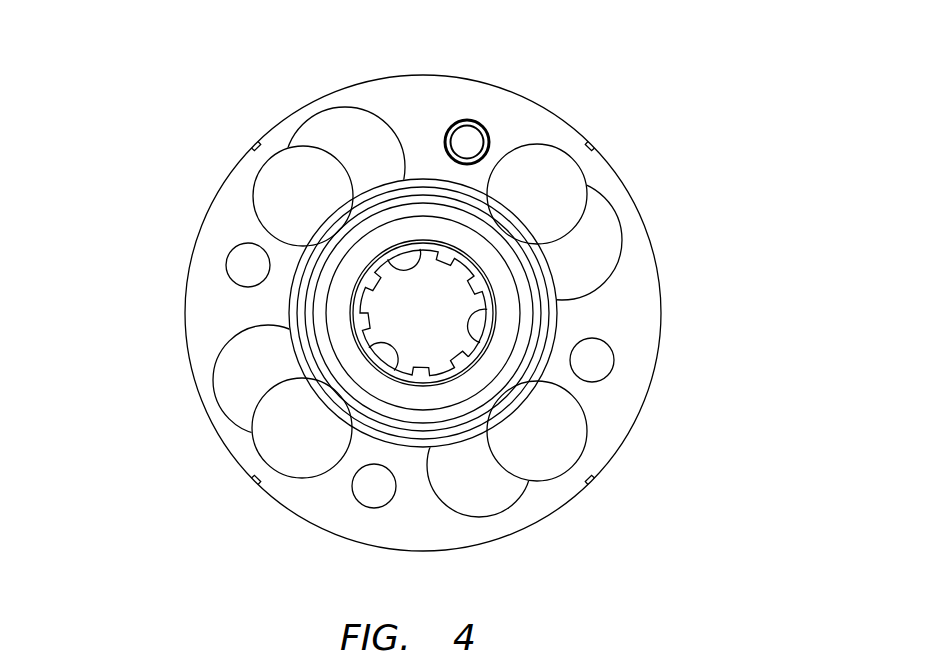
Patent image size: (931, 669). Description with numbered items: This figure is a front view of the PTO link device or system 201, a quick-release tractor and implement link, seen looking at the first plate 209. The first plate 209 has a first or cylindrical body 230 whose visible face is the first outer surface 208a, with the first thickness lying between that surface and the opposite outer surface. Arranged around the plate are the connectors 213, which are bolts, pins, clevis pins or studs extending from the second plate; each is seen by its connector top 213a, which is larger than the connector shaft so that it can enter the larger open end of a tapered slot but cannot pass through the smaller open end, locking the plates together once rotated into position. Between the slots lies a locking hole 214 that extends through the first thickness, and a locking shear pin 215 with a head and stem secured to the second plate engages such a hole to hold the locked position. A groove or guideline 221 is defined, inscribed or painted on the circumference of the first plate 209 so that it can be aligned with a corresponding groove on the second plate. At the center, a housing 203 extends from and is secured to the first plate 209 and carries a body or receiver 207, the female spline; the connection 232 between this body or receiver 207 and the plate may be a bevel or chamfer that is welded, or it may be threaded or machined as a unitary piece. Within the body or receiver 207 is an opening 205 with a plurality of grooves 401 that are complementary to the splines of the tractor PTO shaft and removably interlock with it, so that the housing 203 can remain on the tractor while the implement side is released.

The PTO link device or system 201 is at (699, 146).
The housing 203 is at (146, 147).
The opening 205 is at (501, 389).
The body or receiver 207 is at (557, 328).
The first outer surface 208a is at (247, 318).
The first plate 209 is at (448, 73).
The connectors 213 is at (561, 146).
The connector top 213a is at (288, 146).
The locking hole 214 is at (613, 367).
The locking shear pin 215 is at (474, 122).
The groove or guideline 221 is at (594, 135).
The first or cylindrical body 230 is at (159, 372).
The connection 232 is at (424, 174).
The grooves 401 is at (374, 357).